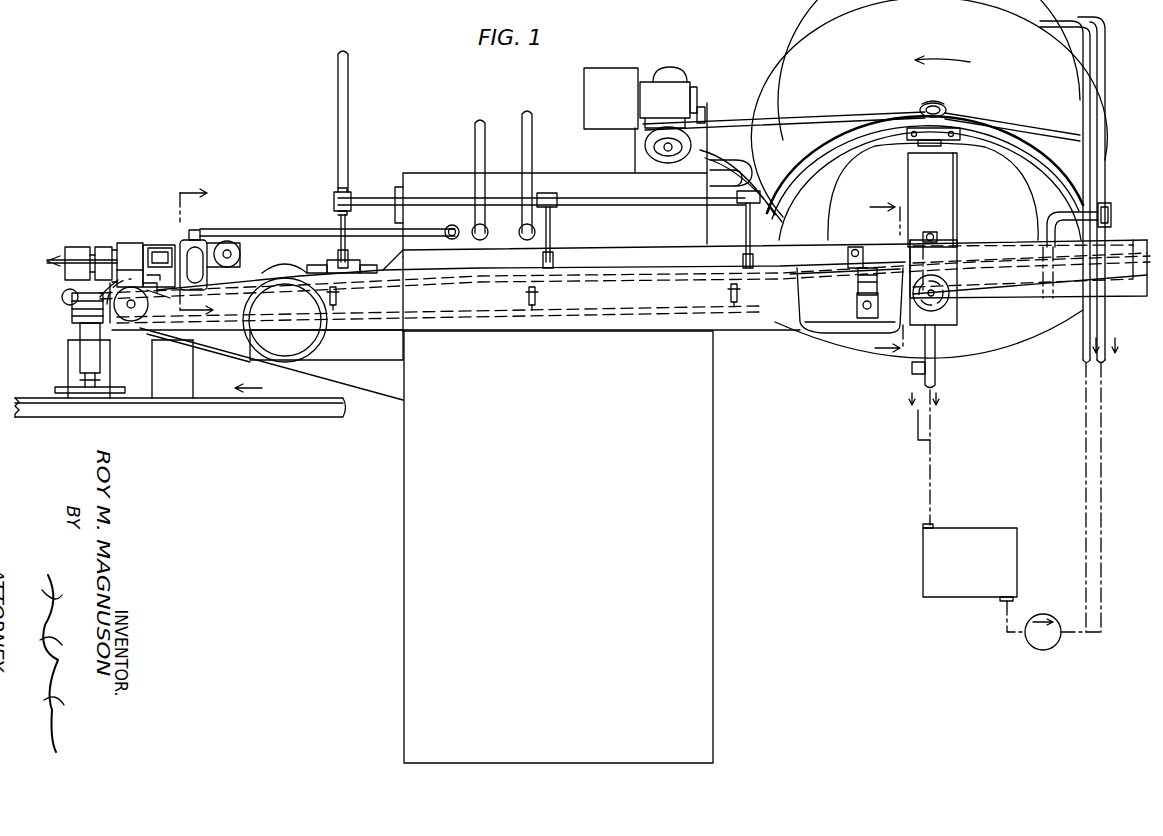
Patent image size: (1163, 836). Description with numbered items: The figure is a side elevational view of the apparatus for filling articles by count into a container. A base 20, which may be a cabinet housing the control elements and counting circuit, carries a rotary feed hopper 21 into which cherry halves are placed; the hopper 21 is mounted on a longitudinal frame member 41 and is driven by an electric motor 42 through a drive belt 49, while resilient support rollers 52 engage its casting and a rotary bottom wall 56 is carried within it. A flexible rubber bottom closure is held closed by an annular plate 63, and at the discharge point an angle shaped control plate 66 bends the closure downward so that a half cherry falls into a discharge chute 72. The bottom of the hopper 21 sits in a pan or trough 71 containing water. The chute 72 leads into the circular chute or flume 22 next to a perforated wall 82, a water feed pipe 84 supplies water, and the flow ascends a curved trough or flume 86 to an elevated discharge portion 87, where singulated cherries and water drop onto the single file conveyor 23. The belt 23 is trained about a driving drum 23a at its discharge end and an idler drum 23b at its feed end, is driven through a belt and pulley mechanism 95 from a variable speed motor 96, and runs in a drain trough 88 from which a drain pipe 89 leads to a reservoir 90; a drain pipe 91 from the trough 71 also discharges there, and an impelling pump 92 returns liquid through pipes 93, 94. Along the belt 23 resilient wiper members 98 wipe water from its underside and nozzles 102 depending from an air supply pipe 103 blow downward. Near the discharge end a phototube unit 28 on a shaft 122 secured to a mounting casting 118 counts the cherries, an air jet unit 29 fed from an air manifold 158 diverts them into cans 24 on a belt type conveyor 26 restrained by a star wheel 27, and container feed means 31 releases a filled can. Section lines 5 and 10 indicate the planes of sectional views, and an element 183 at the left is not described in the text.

The section line 5- 5 is at (876, 276).
The section line 10- 10 is at (209, 250).
The base 20 is at (536, 537).
The rotary feed hopper 21 is at (825, 36).
The single filing chute 22 is at (996, 314).
The single file feed belt 23 is at (468, 282).
The driving drum 23a is at (140, 305).
The idler drum 23b is at (932, 305).
The cans 24 is at (196, 382).
The belt type conveyor 26 is at (343, 404).
The star wheel 27 is at (60, 392).
The phototube unit 28 is at (206, 226).
The air jet unit 29 is at (124, 226).
The container feed means 31 is at (51, 314).
The longitudinal frame member 41 is at (772, 262).
The electric motor 42 is at (597, 108).
The drive belt 49 is at (835, 118).
The resilient support rollers 52 is at (940, 104).
The rotary bottom wall 56 is at (984, 220).
The annular plate 63 is at (838, 186).
The control plate 66 is at (932, 140).
The pan or trough 71 is at (1040, 336).
The discharge chute 72 is at (955, 186).
The perforated wall 82 is at (973, 259).
The water feed pipe 84 is at (1072, 218).
The curved trough or flume 86 is at (1012, 288).
The elevated discharge portion 87 is at (896, 252).
The drain trough 88 is at (780, 324).
The drain pipe 89 is at (936, 366).
The reservoir 90 is at (958, 553).
The drain pipe 91 is at (920, 413).
The impelling pump 92 is at (1048, 647).
The pipe 93 is at (1085, 366).
The pipe 94 is at (1108, 366).
The belt and pulley mechanism 95 is at (210, 333).
The variable speed motor 96 is at (325, 338).
The resilient wiper members 98 is at (337, 301).
The nozzles 102 is at (345, 266).
The air supply pipe 103 is at (368, 198).
The mounting casting 118 is at (240, 252).
The shaft 122 is at (222, 243).
The air manifold 158 is at (48, 262).
The cylinder 183 is at (62, 348).